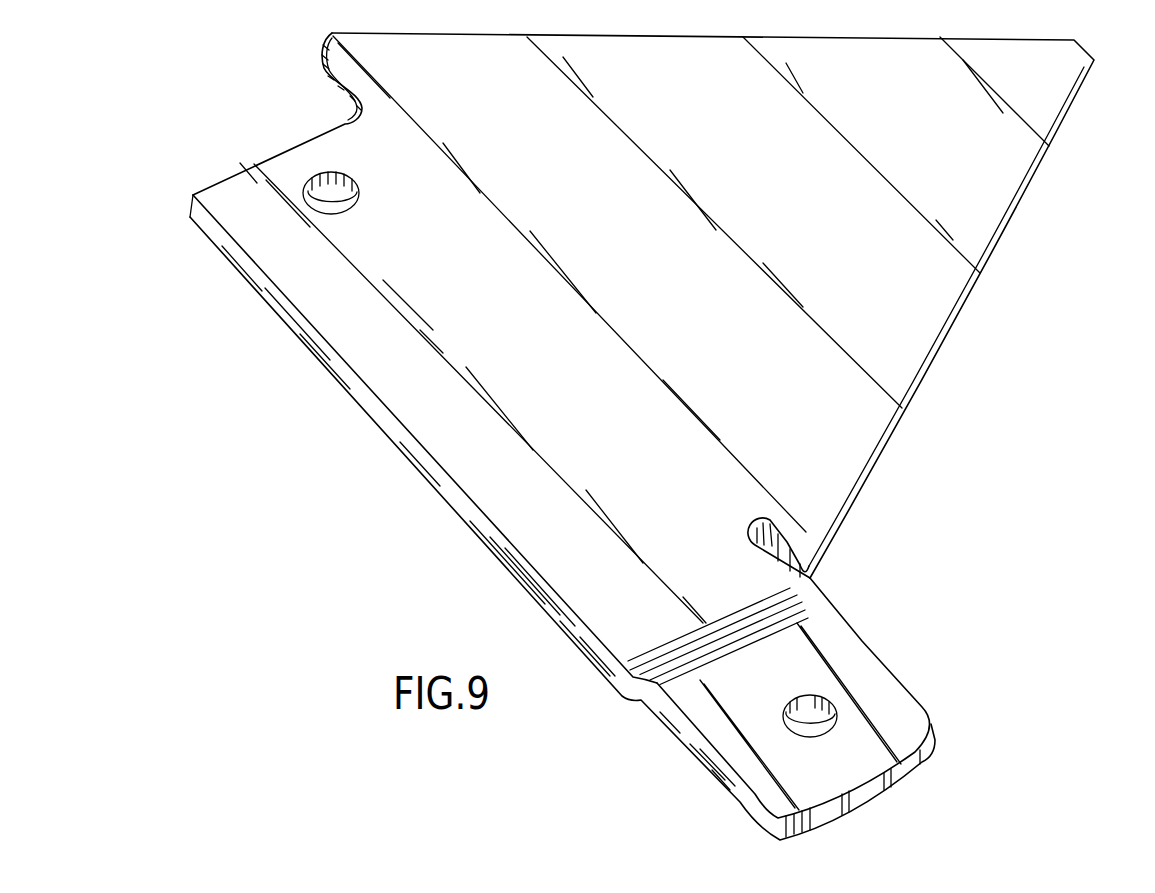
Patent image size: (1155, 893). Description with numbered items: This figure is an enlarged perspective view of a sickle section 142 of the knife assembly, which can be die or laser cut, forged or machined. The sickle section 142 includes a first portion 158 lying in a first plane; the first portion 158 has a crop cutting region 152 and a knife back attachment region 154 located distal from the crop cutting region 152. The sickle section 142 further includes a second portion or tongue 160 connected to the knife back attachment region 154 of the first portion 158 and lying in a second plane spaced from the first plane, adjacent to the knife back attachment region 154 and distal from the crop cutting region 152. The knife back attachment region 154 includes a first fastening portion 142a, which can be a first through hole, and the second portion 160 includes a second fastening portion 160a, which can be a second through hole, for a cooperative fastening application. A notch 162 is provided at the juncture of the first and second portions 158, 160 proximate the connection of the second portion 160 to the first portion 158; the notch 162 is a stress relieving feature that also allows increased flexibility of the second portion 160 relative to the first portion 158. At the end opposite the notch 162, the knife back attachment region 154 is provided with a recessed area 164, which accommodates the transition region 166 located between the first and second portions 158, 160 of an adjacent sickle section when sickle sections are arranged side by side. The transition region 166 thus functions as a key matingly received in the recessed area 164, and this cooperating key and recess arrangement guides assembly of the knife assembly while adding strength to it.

The sickle section 142 is at (1002, 342).
The first fastening portion 142a is at (306, 182).
The crop cutting region 152 is at (943, 172).
The knife back attachment region 154 is at (477, 430).
The first portion 158 is at (910, 420).
The second portion 160 is at (896, 663).
The second fastening portion 160a is at (815, 698).
The notch 162 is at (780, 563).
The recessed area 164 is at (297, 141).
The transition region 166 is at (636, 700).